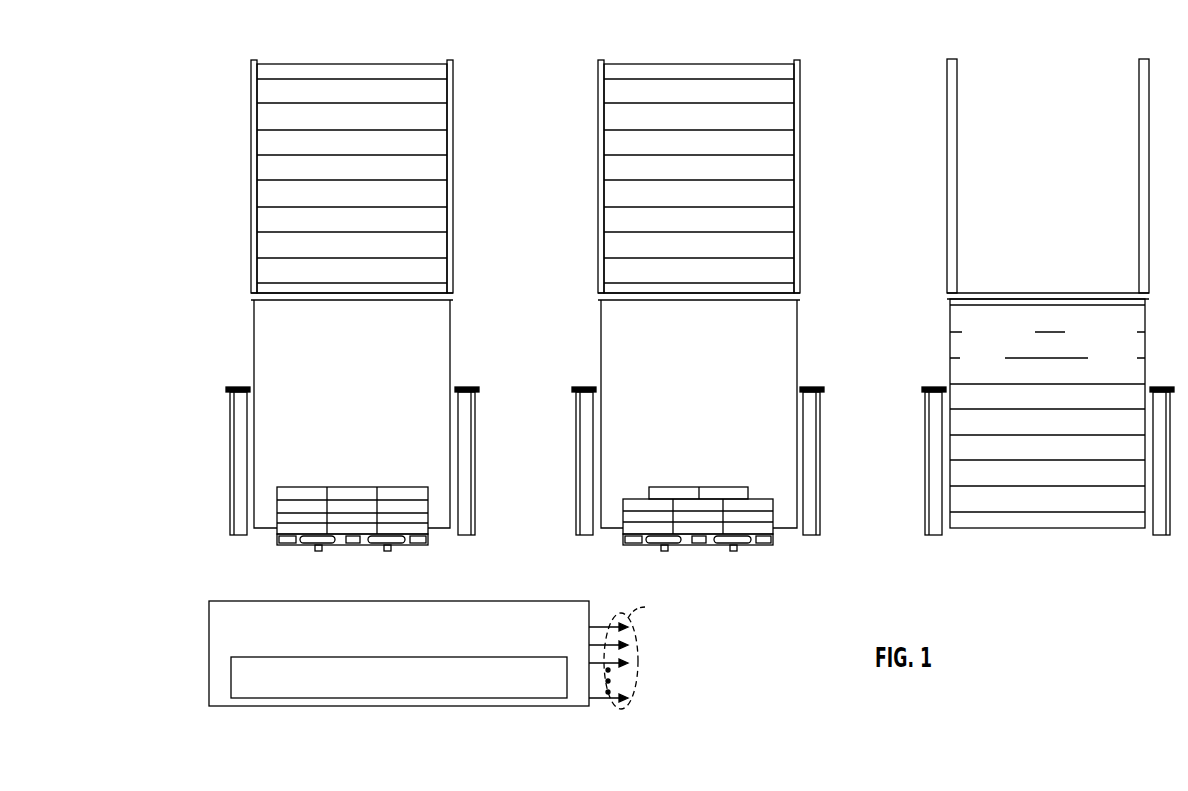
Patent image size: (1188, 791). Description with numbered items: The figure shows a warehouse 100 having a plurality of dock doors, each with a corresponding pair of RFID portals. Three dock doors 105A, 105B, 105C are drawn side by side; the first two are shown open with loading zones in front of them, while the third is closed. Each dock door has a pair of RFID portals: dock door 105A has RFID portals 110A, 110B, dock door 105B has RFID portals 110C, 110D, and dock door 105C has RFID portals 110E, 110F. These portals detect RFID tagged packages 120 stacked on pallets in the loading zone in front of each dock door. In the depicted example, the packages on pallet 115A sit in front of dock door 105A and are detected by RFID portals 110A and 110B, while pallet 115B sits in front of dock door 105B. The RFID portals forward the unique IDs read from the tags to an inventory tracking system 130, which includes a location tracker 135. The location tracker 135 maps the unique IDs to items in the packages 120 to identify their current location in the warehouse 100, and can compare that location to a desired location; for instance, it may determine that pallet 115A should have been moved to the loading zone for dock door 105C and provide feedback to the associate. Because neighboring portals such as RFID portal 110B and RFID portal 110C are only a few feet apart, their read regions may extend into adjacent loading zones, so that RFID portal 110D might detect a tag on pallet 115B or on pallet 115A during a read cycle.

The warehouse 100 is at (219, 91).
The dock door 105A is at (239, 324).
The dock door 105B is at (586, 324).
The dock door 105C is at (936, 324).
The RFID portal 110A is at (243, 387).
The RFID portal 110B is at (461, 387).
The RFID portal 110C is at (589, 387).
The RFID portal 110D is at (807, 387).
The RFID portal 110E is at (939, 387).
The RFID portal 110F is at (1157, 387).
The pallet 115A is at (407, 564).
The pallet 115B is at (765, 564).
The RFID tagged packages 120 is at (725, 487).
The inventory tracking system 130 is at (545, 601).
The location tracker 135 is at (522, 657).